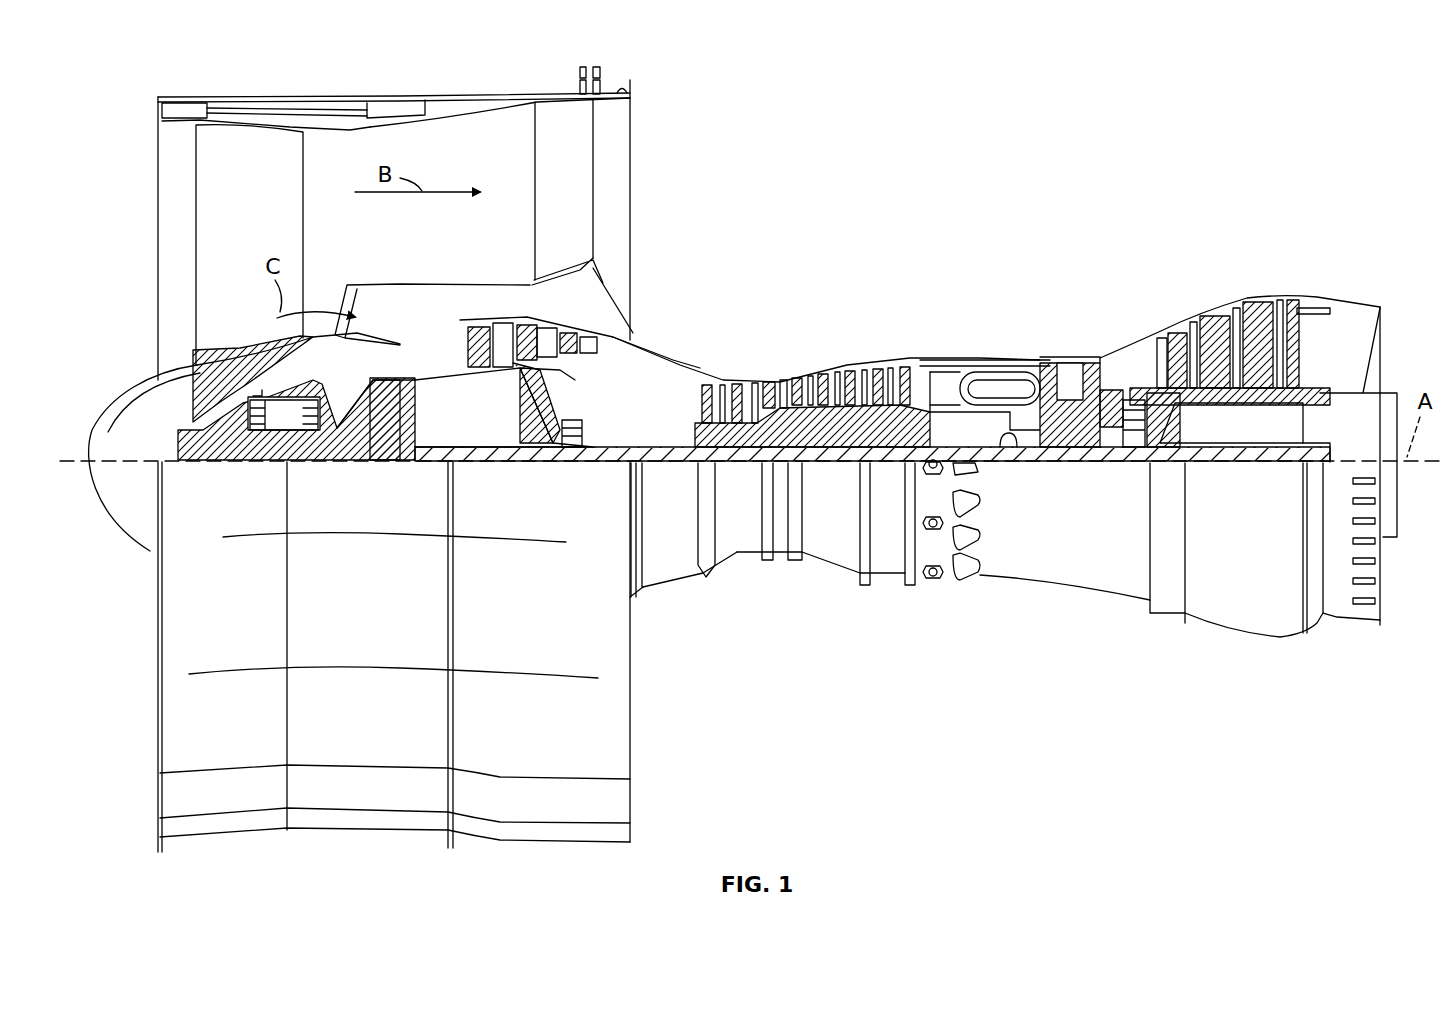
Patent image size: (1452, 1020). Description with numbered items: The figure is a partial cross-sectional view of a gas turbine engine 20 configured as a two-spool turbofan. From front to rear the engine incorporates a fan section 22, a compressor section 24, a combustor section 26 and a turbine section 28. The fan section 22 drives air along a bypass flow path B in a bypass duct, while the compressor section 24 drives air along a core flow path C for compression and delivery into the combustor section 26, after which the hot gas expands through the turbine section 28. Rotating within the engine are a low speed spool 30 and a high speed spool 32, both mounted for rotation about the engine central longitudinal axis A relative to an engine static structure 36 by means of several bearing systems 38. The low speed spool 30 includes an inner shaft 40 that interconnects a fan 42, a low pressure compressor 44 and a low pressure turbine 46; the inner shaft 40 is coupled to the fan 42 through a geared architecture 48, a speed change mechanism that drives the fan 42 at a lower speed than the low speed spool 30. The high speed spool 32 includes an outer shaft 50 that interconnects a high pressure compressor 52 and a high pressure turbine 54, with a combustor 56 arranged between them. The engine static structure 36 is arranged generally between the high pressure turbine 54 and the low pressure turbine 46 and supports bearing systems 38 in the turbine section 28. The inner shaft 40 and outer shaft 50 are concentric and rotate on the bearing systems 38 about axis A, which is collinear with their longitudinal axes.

The gas turbine engine 20 is at (1204, 130).
The fan section 22 is at (298, 85).
The compressor section 24 is at (871, 294).
The combustor section 26 is at (973, 325).
The turbine section 28 is at (1132, 322).
The low speed spool 30 is at (851, 469).
The high speed spool 32 is at (900, 413).
The engine static structure 36 is at (890, 589).
The bearing systems 38 is at (262, 412).
The inner shaft 40 is at (643, 457).
The fan 42 is at (275, 219).
The low pressure compressor 44 is at (543, 328).
The low pressure turbine 46 is at (1240, 315).
The geared architecture 48 is at (398, 432).
The outer shaft 50 is at (1010, 445).
The high pressure compressor 52 is at (810, 417).
The high pressure turbine 54 is at (1070, 357).
The combustor 56 is at (993, 380).